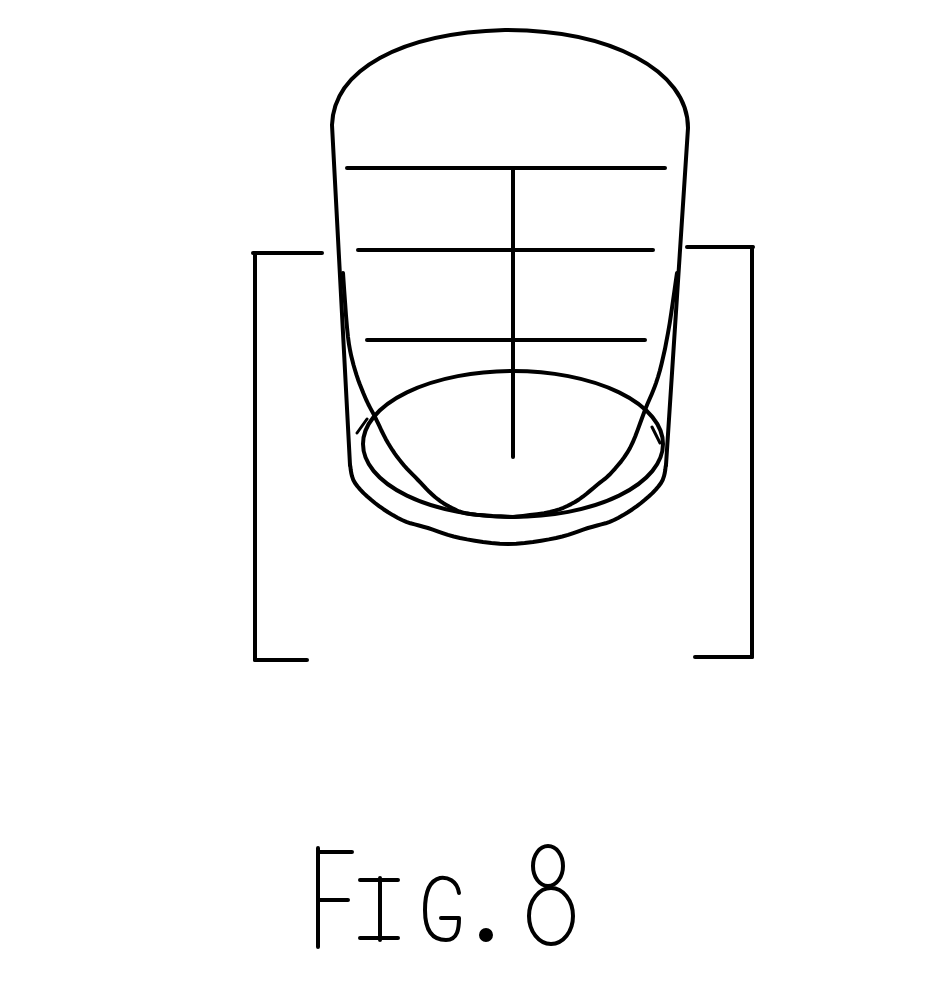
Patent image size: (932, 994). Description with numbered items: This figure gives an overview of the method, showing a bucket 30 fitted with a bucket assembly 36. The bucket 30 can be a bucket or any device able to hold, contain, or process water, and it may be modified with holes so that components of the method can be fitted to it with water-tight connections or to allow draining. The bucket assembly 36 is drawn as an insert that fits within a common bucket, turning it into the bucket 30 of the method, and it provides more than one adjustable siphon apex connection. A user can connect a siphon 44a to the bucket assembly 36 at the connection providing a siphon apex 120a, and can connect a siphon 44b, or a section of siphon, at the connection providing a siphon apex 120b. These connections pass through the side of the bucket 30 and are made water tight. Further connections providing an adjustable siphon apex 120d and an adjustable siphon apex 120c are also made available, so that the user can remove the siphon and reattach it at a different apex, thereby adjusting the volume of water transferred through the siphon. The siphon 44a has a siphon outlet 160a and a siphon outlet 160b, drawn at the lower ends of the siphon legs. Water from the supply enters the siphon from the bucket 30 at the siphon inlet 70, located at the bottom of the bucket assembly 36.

The bucket 30 is at (510, 287).
The bucket assembly 36 is at (513, 300).
The siphon inlet 70 is at (513, 457).
The siphon apex 120a is at (275, 253).
The siphon apex 120b is at (723, 247).
The adjustable siphon apex 120c is at (645, 340).
The adjustable siphon apex 120d is at (510, 135).
The siphon 44a is at (255, 422).
The siphon 44b is at (752, 420).
The siphon outlet 160a is at (351, 659).
The siphon outlet 160b is at (686, 658).